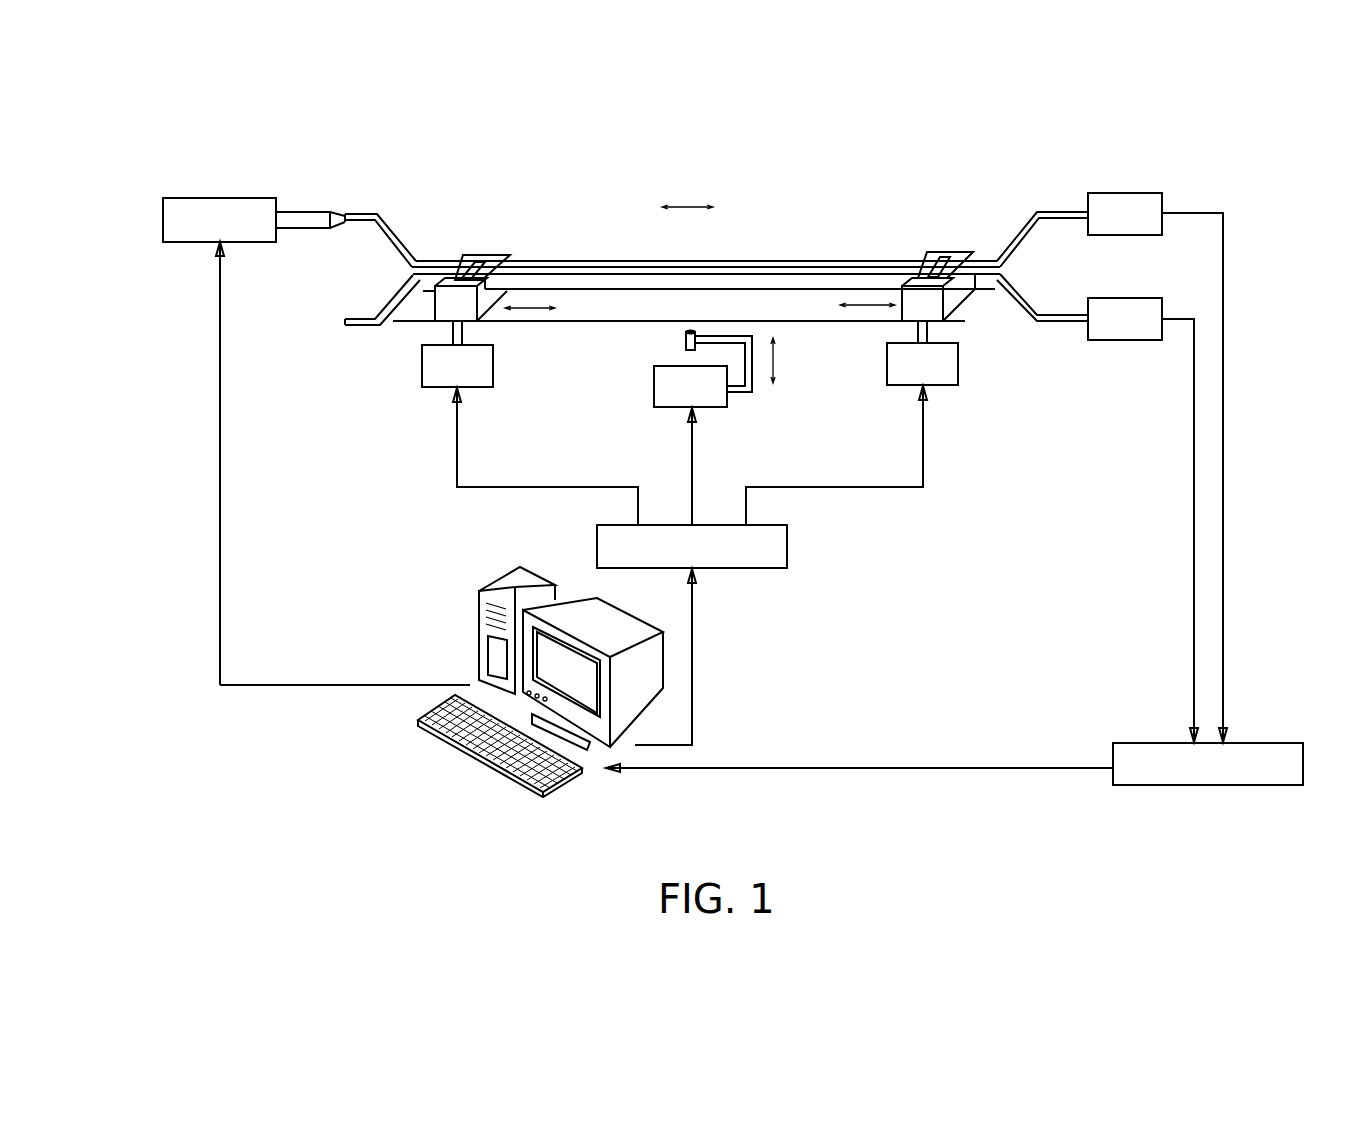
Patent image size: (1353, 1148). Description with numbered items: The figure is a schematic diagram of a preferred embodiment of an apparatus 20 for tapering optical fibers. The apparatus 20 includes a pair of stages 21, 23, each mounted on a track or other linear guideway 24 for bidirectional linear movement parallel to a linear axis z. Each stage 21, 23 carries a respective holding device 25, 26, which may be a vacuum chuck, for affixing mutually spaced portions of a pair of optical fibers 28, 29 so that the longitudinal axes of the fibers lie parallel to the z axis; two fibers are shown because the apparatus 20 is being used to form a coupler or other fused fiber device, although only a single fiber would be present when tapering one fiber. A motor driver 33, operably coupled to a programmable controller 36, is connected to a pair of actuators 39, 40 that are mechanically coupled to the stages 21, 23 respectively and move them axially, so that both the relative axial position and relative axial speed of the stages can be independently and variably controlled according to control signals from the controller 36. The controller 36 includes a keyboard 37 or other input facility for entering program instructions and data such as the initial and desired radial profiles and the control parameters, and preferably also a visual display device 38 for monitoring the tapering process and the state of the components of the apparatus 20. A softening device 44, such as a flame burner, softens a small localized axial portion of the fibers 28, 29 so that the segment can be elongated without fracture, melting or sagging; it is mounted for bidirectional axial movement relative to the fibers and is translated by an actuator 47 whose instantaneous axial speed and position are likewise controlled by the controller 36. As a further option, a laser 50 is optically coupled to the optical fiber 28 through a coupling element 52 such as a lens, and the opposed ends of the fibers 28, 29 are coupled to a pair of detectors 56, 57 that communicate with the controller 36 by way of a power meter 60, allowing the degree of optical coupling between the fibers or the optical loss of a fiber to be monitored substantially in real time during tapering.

The apparatus 20 is at (756, 227).
The stage 21 is at (430, 310).
The stage 23 is at (935, 310).
The linear guideway 24 is at (565, 295).
The holding device 25 is at (475, 253).
The holding device 26 is at (957, 251).
The optical fiber 28 is at (400, 233).
The optical fiber 29 is at (357, 318).
The motor driver 33 is at (748, 570).
The programmable controller 36 is at (493, 585).
The keyboard 37 is at (440, 735).
The monitor 38 is at (593, 683).
The actuator 39 is at (422, 380).
The actuator 40 is at (958, 378).
The softening device 44 is at (683, 337).
The actuator 47 is at (653, 402).
The laser 50 is at (229, 198).
The coupling element 52 is at (331, 210).
The detector 56 is at (1145, 193).
The detector 57 is at (1133, 341).
The power meter 60 is at (1179, 787).